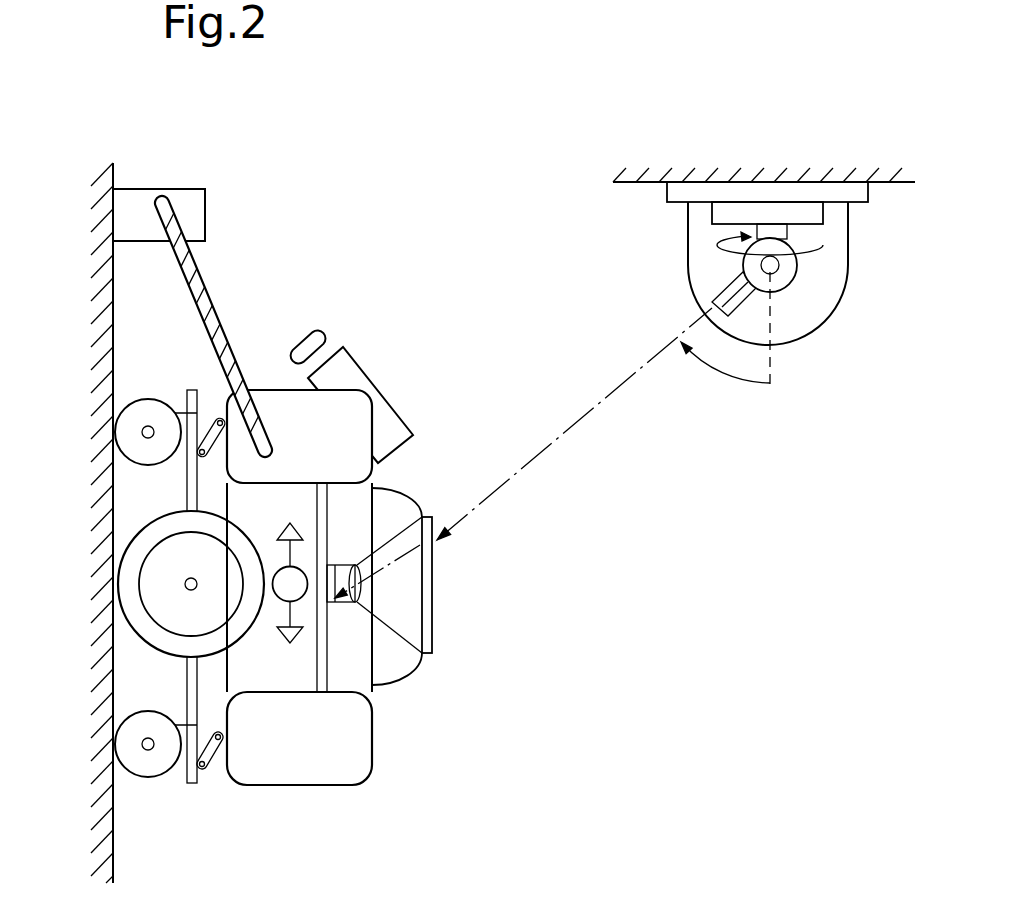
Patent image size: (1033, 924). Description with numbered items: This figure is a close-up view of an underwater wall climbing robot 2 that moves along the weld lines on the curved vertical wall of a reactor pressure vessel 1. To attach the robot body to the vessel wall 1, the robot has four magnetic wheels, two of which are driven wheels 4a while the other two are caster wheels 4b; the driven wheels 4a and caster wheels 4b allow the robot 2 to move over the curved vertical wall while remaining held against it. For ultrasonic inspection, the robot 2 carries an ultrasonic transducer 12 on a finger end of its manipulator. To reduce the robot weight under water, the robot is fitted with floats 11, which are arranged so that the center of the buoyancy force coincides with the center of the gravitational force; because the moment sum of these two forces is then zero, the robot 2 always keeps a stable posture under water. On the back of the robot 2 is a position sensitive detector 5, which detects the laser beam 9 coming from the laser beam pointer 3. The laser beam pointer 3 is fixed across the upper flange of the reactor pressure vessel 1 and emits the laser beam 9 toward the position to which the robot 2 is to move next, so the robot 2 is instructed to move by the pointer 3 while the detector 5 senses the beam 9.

The reactor pressure vessel 1 is at (92, 187).
The underwater wall climbing robot 2 is at (338, 597).
The laser beam pointer 3 is at (830, 313).
The driven wheels 4a is at (158, 660).
The caster wheels 4b is at (148, 399).
The position sensitive detector 5 is at (358, 575).
The laser beam 9 is at (563, 433).
The floats 11 is at (345, 415).
The ultrasonic transducer 12 is at (205, 206).